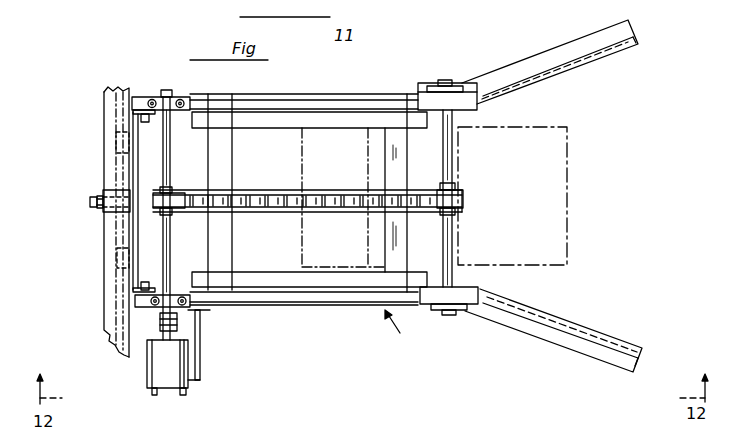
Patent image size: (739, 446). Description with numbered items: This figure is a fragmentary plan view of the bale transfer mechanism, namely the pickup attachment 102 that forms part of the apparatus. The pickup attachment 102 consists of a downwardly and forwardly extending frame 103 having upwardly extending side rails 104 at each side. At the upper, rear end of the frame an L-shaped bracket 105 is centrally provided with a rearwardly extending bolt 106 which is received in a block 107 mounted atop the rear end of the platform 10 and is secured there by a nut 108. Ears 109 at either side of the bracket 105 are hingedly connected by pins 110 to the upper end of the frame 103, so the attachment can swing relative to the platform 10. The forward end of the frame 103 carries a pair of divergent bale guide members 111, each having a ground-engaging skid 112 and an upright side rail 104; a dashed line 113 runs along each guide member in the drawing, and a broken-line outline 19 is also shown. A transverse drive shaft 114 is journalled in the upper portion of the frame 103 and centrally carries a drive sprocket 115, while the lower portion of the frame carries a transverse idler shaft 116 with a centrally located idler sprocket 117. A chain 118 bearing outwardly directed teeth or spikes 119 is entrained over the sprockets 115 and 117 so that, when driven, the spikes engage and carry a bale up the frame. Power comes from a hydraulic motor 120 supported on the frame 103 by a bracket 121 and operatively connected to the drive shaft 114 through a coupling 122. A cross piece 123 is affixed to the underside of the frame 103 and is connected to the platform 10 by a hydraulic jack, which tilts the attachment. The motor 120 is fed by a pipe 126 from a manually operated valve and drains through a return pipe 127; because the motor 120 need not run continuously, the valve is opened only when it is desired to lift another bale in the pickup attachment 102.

The platform 10 is at (115, 90).
The article (phantom) 19 is at (570, 214).
The pickup attachment 102 is at (401, 333).
The frame 103 is at (307, 303).
The side rails 104 is at (338, 94).
The L-shaped bracket 105 is at (143, 218).
The bolt 106 is at (90, 201).
The block 107 is at (118, 190).
The nut 108 is at (101, 201).
The ears 109 is at (148, 116).
The pins 110 is at (143, 101).
The bale guide members 111 is at (607, 38).
The ground-engaging skids 112 is at (510, 67).
The guide strip 113 is at (565, 68).
The transverse drive shaft 114 is at (168, 242).
The drive sprocket 115 is at (177, 194).
The transverse idler shaft 116 is at (451, 153).
The idler sprocket 117 is at (471, 199).
The chain 118 is at (320, 190).
The teeth or spikes 119 is at (282, 199).
The hydraulic motor 120 is at (147, 370).
The bracket 121 is at (200, 329).
The coupling 122 is at (160, 324).
The cross piece 123 is at (226, 240).
The pipe 126 is at (154, 396).
The return pipe 127 is at (184, 396).